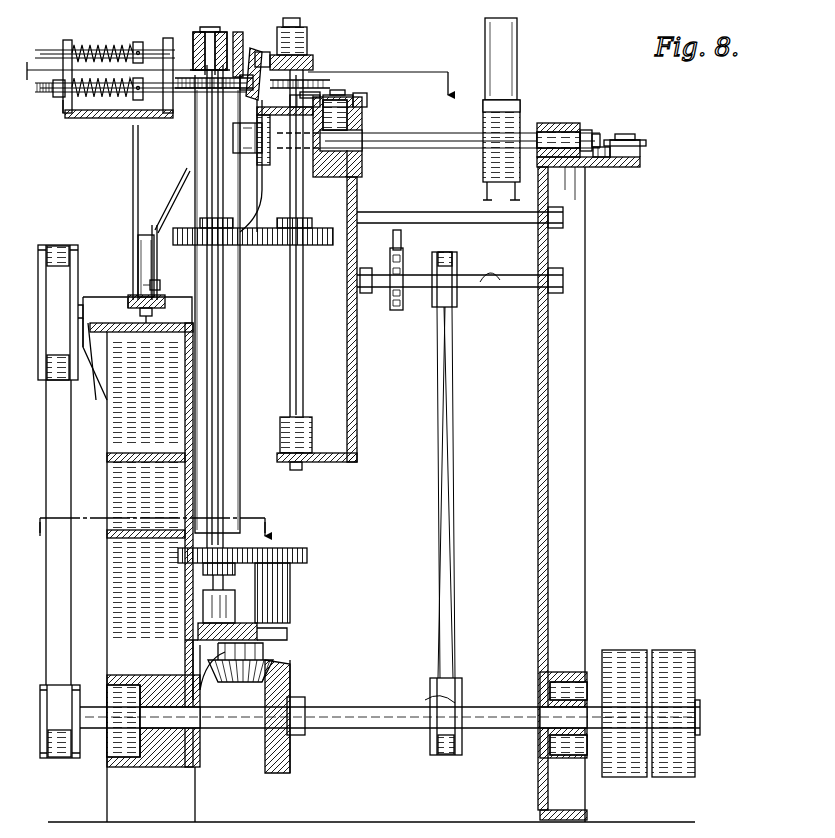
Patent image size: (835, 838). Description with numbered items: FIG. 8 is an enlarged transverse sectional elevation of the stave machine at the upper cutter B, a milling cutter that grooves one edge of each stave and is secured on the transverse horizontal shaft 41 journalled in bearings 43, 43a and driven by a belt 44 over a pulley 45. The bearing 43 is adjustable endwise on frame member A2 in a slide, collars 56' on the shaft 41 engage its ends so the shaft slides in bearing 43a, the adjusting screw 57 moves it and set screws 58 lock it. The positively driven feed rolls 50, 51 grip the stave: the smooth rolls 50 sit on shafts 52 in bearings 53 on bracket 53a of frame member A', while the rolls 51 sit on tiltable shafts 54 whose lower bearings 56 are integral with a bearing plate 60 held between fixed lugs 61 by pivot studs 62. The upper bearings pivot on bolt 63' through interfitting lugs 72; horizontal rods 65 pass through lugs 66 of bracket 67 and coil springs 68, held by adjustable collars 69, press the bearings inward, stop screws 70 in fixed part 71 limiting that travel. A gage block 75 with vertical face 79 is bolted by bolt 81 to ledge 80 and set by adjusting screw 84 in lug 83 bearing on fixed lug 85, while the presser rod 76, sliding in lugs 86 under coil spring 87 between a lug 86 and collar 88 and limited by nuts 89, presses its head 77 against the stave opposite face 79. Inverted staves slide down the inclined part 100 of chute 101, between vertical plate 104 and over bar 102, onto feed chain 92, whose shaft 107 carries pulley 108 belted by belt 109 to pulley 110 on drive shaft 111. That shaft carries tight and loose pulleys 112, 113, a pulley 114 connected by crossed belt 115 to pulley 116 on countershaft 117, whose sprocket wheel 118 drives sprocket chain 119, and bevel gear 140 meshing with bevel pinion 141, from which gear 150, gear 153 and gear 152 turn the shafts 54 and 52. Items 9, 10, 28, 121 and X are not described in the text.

The section line 9- 9 is at (160, 538).
The section line 10- 10 is at (242, 69).
The pawl block 28 is at (265, 51).
The transverse horizontal shaft 41 is at (436, 141).
The bearing 43 is at (575, 126).
The bearing 43a is at (358, 160).
The belt 44 is at (505, 68).
The pulley 45 is at (507, 115).
The feed roll 50 is at (316, 96).
The feed roll 51 is at (175, 70).
The shaft 52 is at (292, 333).
The bearing 53 is at (302, 442).
The bracket 53a is at (357, 434).
The shaft 54 is at (222, 420).
The lower bearing 56 is at (182, 661).
The collar 56' is at (589, 198).
The adjusting screw 57 is at (626, 141).
The set screw 58 is at (607, 167).
The bearing plate 60 is at (237, 618).
The fixed lug 61 is at (287, 630).
The pivot stud 62 is at (237, 598).
The bolt 63' is at (209, 41).
The horizontal rod 65 is at (52, 47).
The lug 66 is at (72, 46).
The bracket 67 is at (88, 119).
The coil spring 68 is at (105, 45).
The adjustable collar 69 is at (135, 46).
The adjustable stop screw 70 is at (240, 40).
The fixed part 71 is at (252, 48).
The offset interfitting lug 72 is at (195, 45).
The gage block 75 is at (302, 112).
The presser rod 76 is at (46, 92).
The stave engaging head 77 is at (245, 97).
The stave engaging face 79 is at (285, 57).
The ledge 80 is at (362, 111).
The bolt 81 is at (315, 155).
The lug 83 is at (357, 95).
The adjusting screw 84 is at (340, 96).
The fixed lug 85 is at (367, 103).
The lug 86 is at (62, 115).
The coil spring 87 is at (112, 98).
The collar 88 is at (140, 101).
The adjusting nut 89 is at (58, 98).
The feed chain 92 is at (158, 296).
The downwardly inclined part 100 is at (180, 178).
The plate or chute 101 is at (160, 232).
The bar or support 102 is at (128, 300).
The vertical plate 104 is at (133, 195).
The shaft 107 is at (86, 345).
The pulley 108 is at (42, 248).
The belt 109 is at (72, 458).
The pulley 110 is at (75, 758).
The drive shaft 111 is at (363, 707).
The tight pulley 112 is at (621, 650).
The loose pulley 113 is at (676, 650).
The pulley 114 is at (462, 685).
The crossed belt 115 is at (447, 583).
The pulley 116 is at (458, 302).
The countershaft 117 is at (525, 285).
The sprocket wheel 118 is at (405, 312).
The sprocket chain 119 is at (402, 237).
The clip 121 is at (158, 282).
The bevel gear 140 is at (291, 756).
The bevel pinion 141 is at (270, 660).
The gear 150 is at (180, 548).
The gear 152 is at (317, 247).
The gear 153 is at (236, 247).
The frame member A' is at (136, 559).
The frame member A2 is at (585, 410).
The upper cutter B is at (236, 194).
The feeler X is at (137, 252).